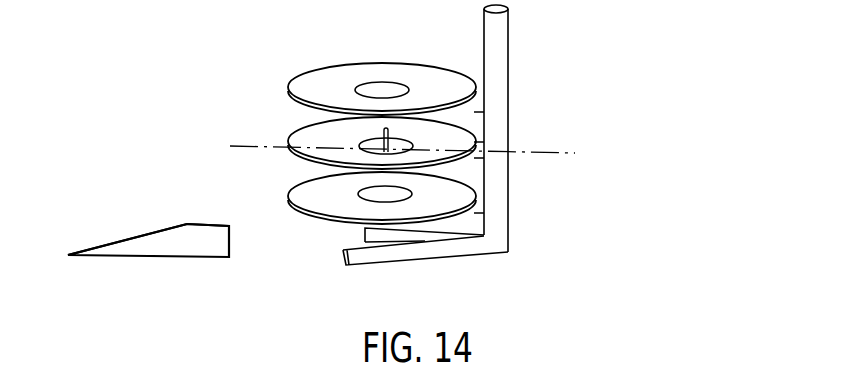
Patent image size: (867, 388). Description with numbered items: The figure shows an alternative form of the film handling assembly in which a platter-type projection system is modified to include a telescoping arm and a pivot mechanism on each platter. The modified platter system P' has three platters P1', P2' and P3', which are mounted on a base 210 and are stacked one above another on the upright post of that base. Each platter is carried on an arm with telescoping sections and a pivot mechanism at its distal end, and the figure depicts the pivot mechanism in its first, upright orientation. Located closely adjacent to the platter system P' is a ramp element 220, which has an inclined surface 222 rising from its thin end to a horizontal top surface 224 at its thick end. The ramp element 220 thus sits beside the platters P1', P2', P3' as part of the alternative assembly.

The ramp element 220 is at (114, 233).
The inclined surface 222 is at (157, 228).
The horizontal top surface 224 is at (202, 223).
The modified platter system P' is at (462, 132).
The base 210 is at (502, 108).
The first platter P1' is at (382, 62).
The second platter P2' is at (355, 157).
The third platter P3' is at (362, 219).